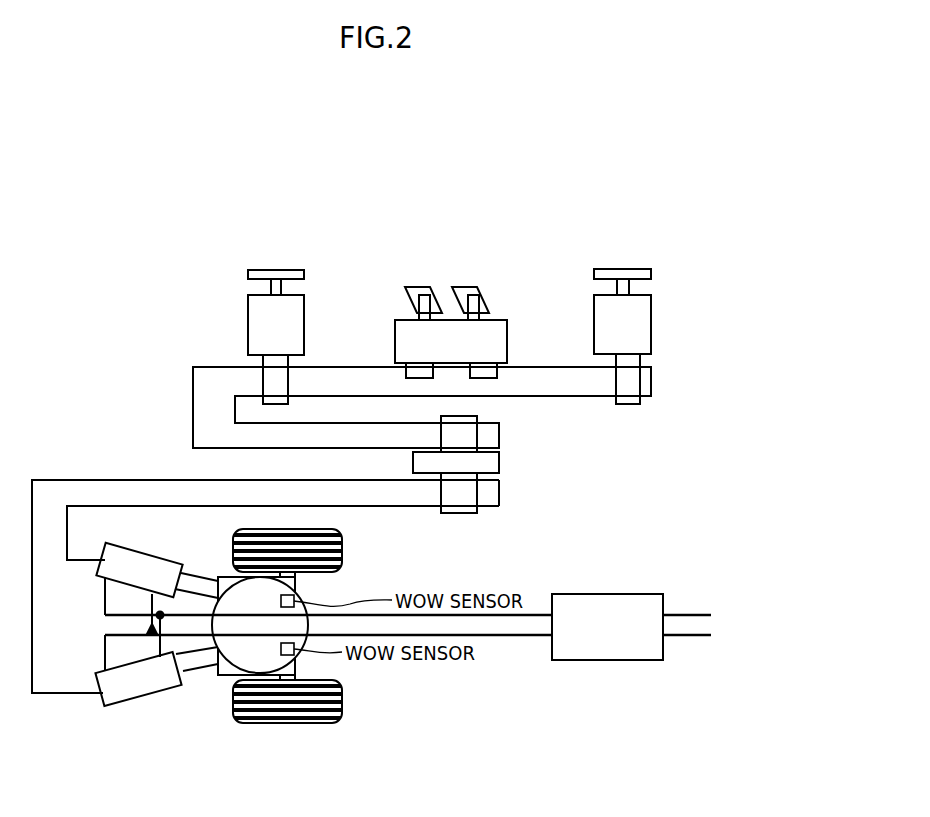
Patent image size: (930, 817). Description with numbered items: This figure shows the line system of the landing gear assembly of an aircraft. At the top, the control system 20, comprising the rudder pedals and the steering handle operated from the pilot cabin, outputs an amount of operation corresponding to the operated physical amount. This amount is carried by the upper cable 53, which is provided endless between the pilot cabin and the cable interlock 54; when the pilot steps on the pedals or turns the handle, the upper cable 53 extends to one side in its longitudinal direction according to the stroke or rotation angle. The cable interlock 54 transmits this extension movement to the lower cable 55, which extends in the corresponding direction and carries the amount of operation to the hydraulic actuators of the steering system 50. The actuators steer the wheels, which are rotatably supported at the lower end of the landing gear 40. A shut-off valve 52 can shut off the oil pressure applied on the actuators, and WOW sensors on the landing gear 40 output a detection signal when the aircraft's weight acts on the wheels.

The control system 20 is at (464, 296).
The landing gear 40 is at (319, 598).
The steering system 50 is at (154, 345).
The shut-off valve 52 is at (594, 583).
The upper cable 53 is at (206, 356).
The cable interlock 54 is at (516, 460).
The lower cable 55 is at (126, 463).